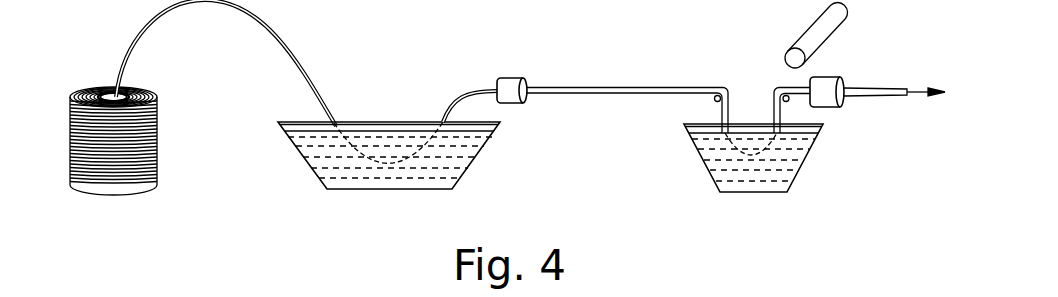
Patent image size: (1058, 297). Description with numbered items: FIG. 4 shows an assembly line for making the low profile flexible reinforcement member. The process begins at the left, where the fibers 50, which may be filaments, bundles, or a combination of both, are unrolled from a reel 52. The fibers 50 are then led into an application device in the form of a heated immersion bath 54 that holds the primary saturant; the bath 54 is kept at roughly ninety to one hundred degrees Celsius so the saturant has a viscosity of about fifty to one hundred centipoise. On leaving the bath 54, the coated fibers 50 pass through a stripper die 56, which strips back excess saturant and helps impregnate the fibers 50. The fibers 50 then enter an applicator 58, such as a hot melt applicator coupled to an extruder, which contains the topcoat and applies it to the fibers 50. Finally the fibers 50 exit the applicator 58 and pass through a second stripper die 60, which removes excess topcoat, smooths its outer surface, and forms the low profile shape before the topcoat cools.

The fibers 50 is at (289, 52).
The reel 52 is at (161, 157).
The heated immersion bath 54 is at (485, 142).
The stripper die 56 is at (512, 77).
The applicator 58 is at (806, 156).
The second stripper die 60 is at (826, 77).